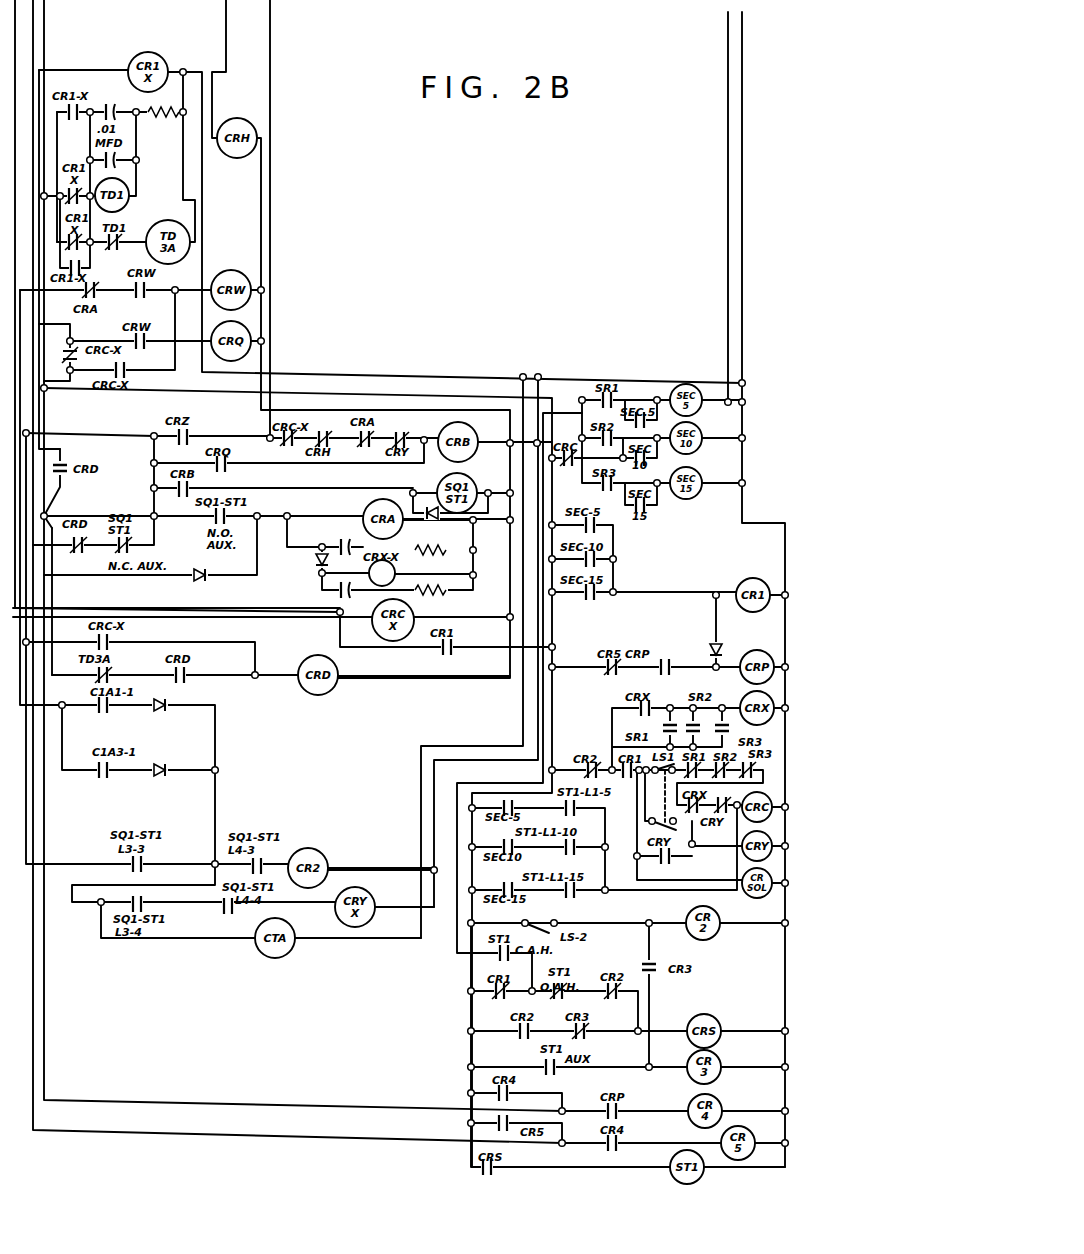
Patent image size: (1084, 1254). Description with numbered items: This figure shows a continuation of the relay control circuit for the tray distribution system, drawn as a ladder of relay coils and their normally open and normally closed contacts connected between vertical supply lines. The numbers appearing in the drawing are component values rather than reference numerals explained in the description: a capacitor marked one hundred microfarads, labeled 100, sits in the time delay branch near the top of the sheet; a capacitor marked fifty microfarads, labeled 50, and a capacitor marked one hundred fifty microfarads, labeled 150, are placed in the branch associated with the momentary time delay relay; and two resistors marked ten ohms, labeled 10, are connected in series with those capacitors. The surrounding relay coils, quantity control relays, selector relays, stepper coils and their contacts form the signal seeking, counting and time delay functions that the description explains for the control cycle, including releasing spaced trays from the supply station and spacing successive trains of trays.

The 100 MFD capacitor 100 is at (108, 98).
The 10 ohm resistors 10 is at (431, 564).
The 50 MFD capacitor 50 is at (324, 543).
The 150 MFD capacitor 150 is at (319, 595).